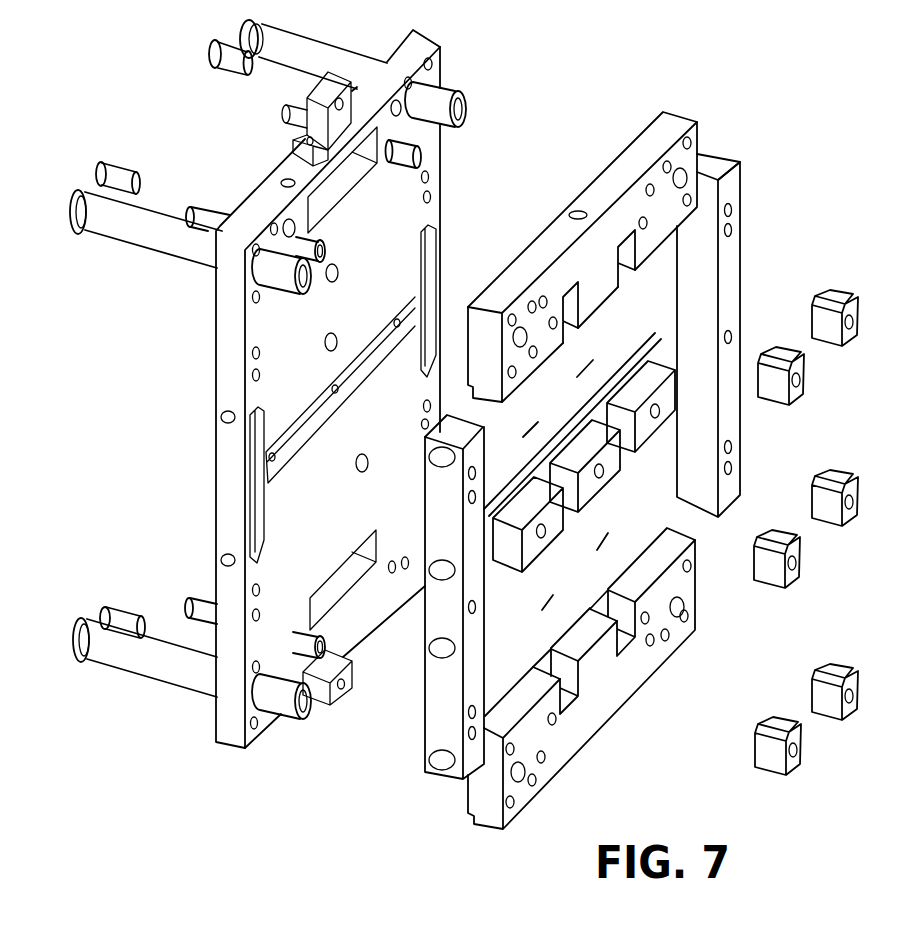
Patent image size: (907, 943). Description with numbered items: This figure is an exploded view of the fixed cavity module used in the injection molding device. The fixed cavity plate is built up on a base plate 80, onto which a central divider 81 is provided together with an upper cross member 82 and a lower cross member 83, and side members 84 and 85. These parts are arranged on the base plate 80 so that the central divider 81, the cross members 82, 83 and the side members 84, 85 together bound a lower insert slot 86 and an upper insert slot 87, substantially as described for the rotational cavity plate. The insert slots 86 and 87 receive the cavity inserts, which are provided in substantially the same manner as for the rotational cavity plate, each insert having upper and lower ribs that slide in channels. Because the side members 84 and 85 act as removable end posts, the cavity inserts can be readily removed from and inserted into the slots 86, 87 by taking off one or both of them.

The base plate 80 is at (420, 213).
The central divider 81 is at (630, 362).
The upper cross member 82 is at (593, 200).
The lower cross member 83 is at (598, 688).
The side member 84 is at (446, 700).
The side member 85 is at (730, 258).
The lower insert slot 86 is at (575, 571).
The upper insert slot 87 is at (584, 466).